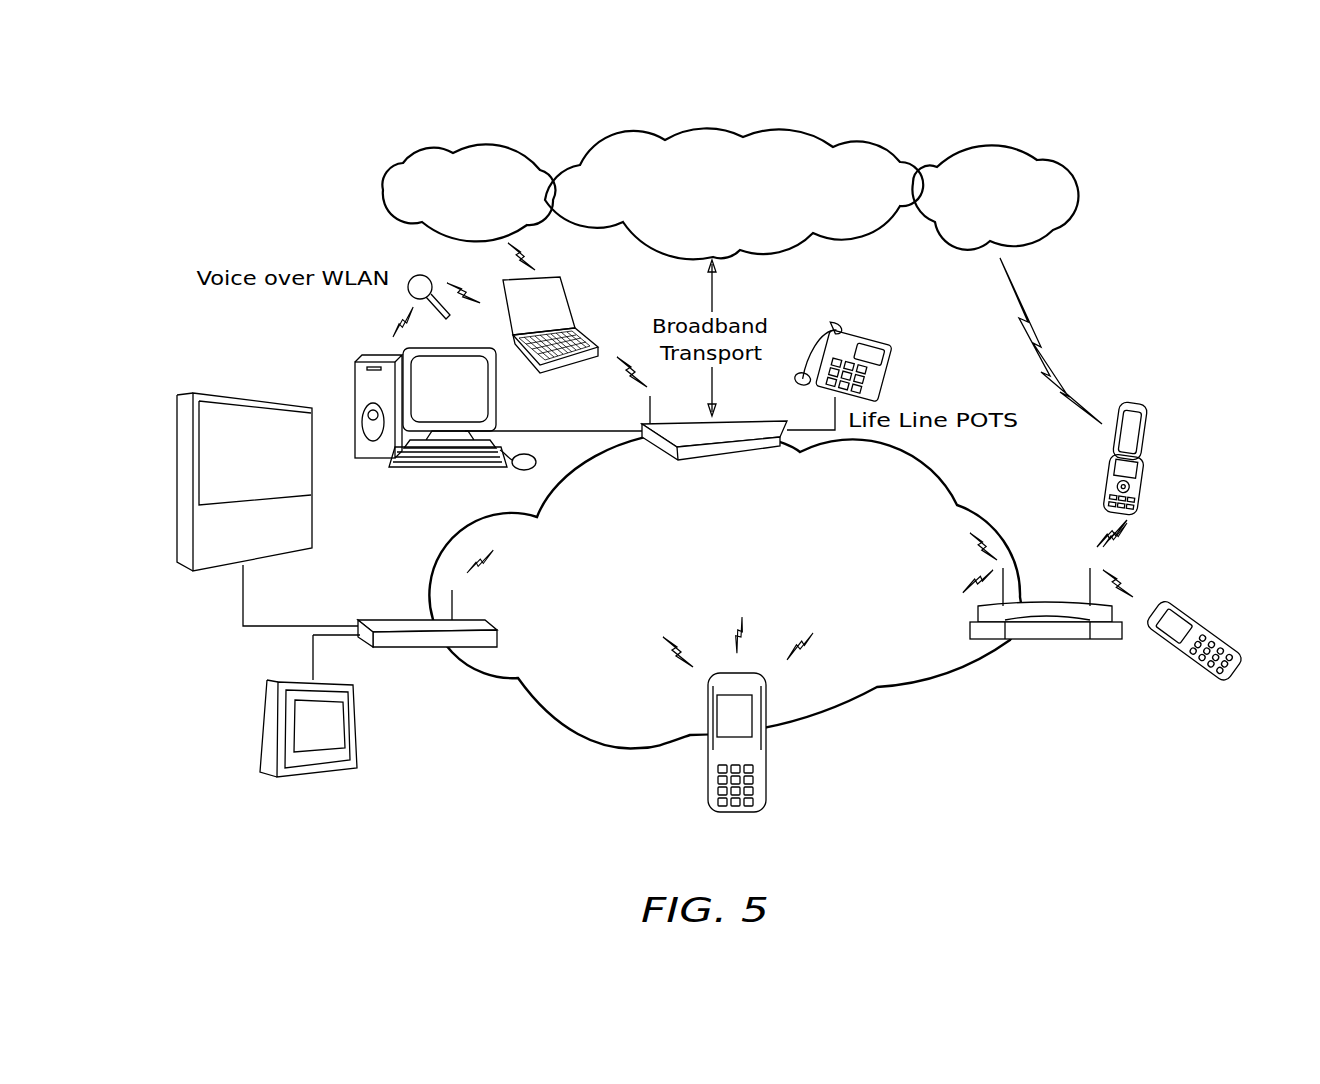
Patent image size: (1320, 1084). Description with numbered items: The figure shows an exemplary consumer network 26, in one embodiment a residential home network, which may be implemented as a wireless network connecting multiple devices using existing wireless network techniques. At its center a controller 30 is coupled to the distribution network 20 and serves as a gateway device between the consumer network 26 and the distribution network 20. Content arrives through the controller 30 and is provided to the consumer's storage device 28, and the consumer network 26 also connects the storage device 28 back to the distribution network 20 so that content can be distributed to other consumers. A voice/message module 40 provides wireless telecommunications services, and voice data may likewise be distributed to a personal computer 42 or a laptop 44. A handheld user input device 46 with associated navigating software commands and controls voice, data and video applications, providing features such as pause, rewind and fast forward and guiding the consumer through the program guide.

The distribution network 20 is at (873, 138).
The consumer network 26 is at (597, 745).
The storage device 28 is at (490, 652).
The controller 30 is at (650, 471).
The voice/message module 40 is at (1125, 636).
The personal computer 42 is at (410, 470).
The laptop 44 is at (572, 302).
The handheld user input device 46 is at (768, 773).